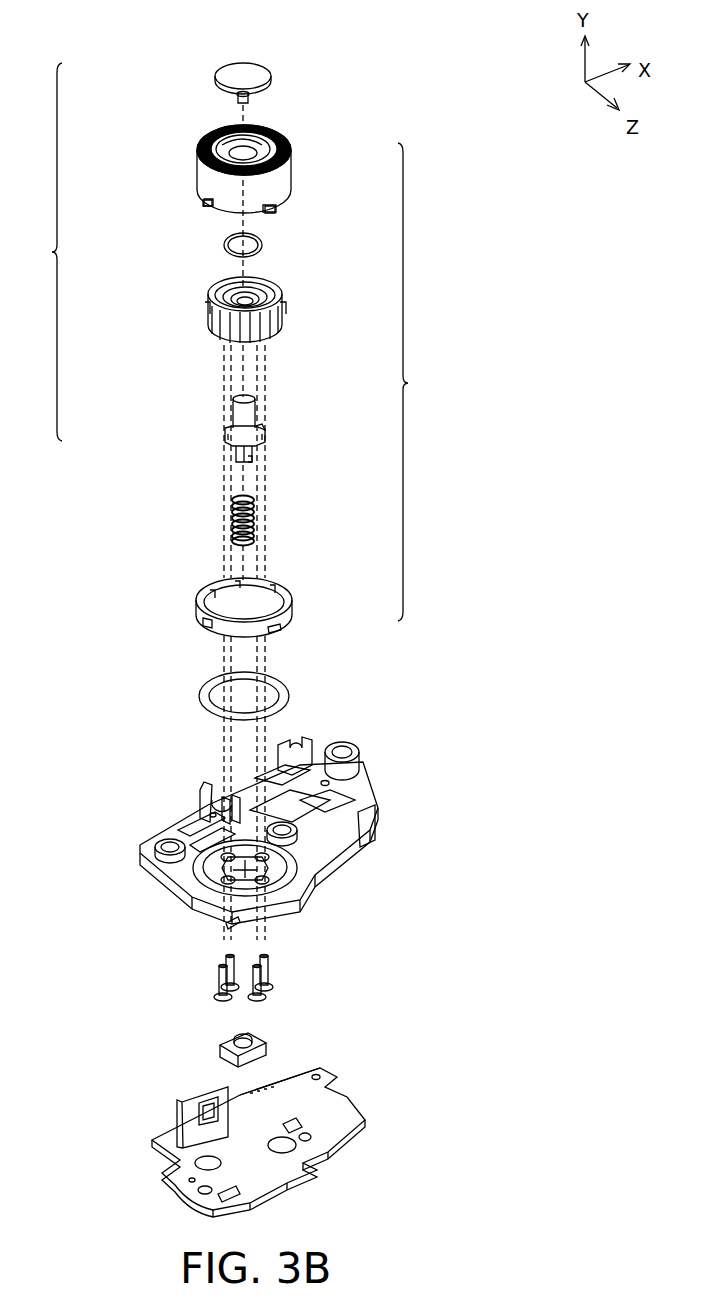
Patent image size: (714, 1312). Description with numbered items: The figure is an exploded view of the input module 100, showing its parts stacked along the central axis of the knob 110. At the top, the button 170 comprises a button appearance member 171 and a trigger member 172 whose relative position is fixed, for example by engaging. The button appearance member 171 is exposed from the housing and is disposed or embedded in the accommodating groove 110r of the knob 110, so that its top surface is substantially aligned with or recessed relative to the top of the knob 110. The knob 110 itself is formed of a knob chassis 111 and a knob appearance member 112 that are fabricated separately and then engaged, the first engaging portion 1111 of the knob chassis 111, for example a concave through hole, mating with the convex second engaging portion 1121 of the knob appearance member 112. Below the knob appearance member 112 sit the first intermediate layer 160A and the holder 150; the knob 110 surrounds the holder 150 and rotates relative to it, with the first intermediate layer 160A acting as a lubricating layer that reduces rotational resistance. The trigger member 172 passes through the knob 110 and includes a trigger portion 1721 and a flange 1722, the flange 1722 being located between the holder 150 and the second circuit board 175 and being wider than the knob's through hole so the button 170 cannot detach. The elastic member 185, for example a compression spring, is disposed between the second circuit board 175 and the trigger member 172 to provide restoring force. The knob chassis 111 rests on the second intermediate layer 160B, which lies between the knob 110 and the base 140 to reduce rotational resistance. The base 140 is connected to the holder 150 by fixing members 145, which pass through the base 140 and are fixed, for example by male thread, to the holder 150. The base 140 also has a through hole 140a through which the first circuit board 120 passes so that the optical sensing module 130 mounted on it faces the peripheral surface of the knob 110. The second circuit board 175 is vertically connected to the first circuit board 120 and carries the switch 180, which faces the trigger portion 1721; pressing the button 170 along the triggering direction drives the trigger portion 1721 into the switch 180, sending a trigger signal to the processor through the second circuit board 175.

The input module 100 is at (151, 43).
The knob 110 is at (422, 382).
The accommodating groove 110r is at (254, 136).
The knob chassis 111 is at (293, 605).
The first engaging portion 1111 is at (280, 628).
The knob appearance member 112 is at (285, 168).
The second engaging portion 1121 is at (276, 211).
The first circuit board 120 is at (180, 1112).
The optical sensing module 130 is at (206, 1105).
The base 140 is at (139, 853).
The through hole 140a is at (205, 838).
The fixing members 145 is at (214, 980).
The holder 150 is at (208, 292).
The first intermediate layer 160A is at (224, 245).
The second intermediate layer 160B is at (200, 697).
The button 170 is at (37, 252).
The button appearance member 171 is at (214, 74).
The trigger member 172 is at (233, 428).
The trigger portion 1721 is at (253, 457).
The flange 1722 is at (263, 430).
The second circuit board 175 is at (298, 1083).
The switch 180 is at (258, 1040).
The elastic member 185 is at (232, 518).